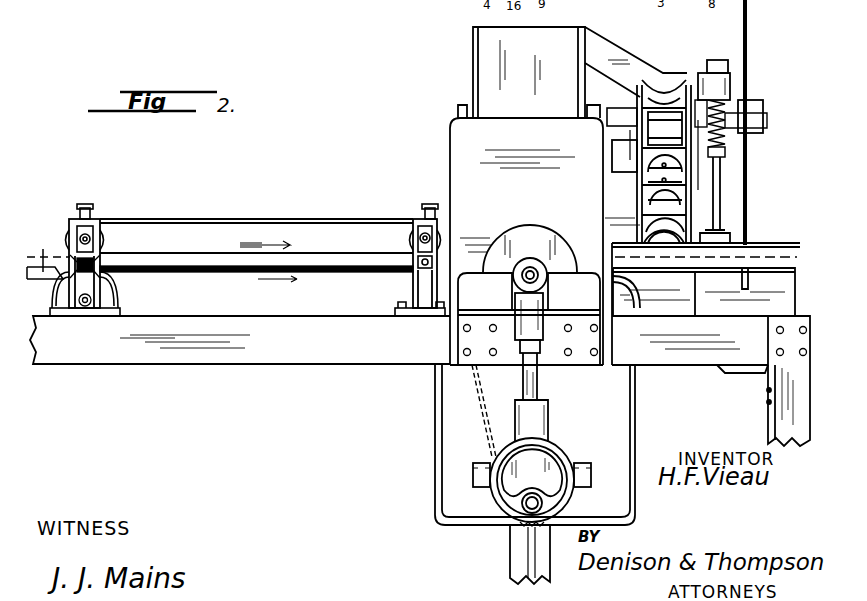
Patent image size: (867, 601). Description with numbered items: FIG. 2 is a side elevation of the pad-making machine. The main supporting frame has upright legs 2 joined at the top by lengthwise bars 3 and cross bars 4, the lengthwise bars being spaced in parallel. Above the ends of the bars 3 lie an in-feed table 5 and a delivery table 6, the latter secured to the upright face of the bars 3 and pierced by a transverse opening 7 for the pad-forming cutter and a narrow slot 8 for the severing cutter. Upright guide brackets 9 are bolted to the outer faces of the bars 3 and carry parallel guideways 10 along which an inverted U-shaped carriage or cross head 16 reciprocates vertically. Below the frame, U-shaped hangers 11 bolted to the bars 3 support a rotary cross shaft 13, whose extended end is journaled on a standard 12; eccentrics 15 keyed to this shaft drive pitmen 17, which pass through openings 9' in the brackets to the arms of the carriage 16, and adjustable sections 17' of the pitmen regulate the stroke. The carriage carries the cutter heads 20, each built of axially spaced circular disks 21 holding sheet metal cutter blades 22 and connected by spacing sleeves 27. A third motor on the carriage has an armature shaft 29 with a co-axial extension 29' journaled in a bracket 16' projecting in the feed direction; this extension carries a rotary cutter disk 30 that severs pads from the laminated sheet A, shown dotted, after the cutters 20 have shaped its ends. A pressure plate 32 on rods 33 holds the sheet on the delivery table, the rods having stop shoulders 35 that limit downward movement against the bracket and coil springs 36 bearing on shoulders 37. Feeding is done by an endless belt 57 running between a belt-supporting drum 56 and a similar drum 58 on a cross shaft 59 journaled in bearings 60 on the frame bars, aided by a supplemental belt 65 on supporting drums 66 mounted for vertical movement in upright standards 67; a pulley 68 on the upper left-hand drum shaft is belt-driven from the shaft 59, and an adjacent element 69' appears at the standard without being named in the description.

The upright legs 2 is at (775, 426).
The lengthwise bars 3 is at (303, 366).
The cross bars 4 is at (760, 373).
The in-feed table 5 is at (48, 256).
The delivery table 6 is at (692, 272).
The transverse opening 7 is at (656, 270).
The slot 8 is at (742, 283).
The upright guide brackets 9 is at (545, 241).
The openings 9' is at (491, 327).
The guideways 10 is at (466, 296).
The U-shaped hangers 11 is at (450, 520).
The standard 12 is at (514, 566).
The rotary cross shaft 13 is at (520, 512).
The eccentrics 15 is at (552, 468).
The carriage or cross head 16 is at (529, 149).
The bracket 16' is at (636, 62).
The pitmen 17 is at (545, 403).
The adjustable sections 17' is at (544, 311).
The cutter heads 20 is at (646, 170).
The circular disks 21 is at (636, 106).
The cutter blades 22 is at (660, 96).
The spacing sleeves 27 is at (665, 129).
The armature shaft 29 is at (607, 127).
The co-axial extension 29' is at (697, 71).
The rotary cutter disk 30 is at (747, 22).
The pressure plate 32 is at (706, 294).
The rods 33 is at (722, 215).
The stop shoulders 35 is at (720, 62).
The coil springs 36 is at (742, 142).
The shoulders 37 is at (726, 154).
The belt-supporting drum 56 is at (636, 298).
The endless belt 57 is at (224, 271).
The drum 58 is at (118, 298).
The cross shaft 59 is at (84, 306).
The bearings 60 is at (88, 306).
The supplemental belt 65 is at (219, 254).
The supporting drums 66 is at (100, 240).
The upright standards 67 is at (94, 224).
The pulley 68 is at (72, 236).
The lower bearing 69' is at (110, 277).
The laminated sheet A is at (618, 257).